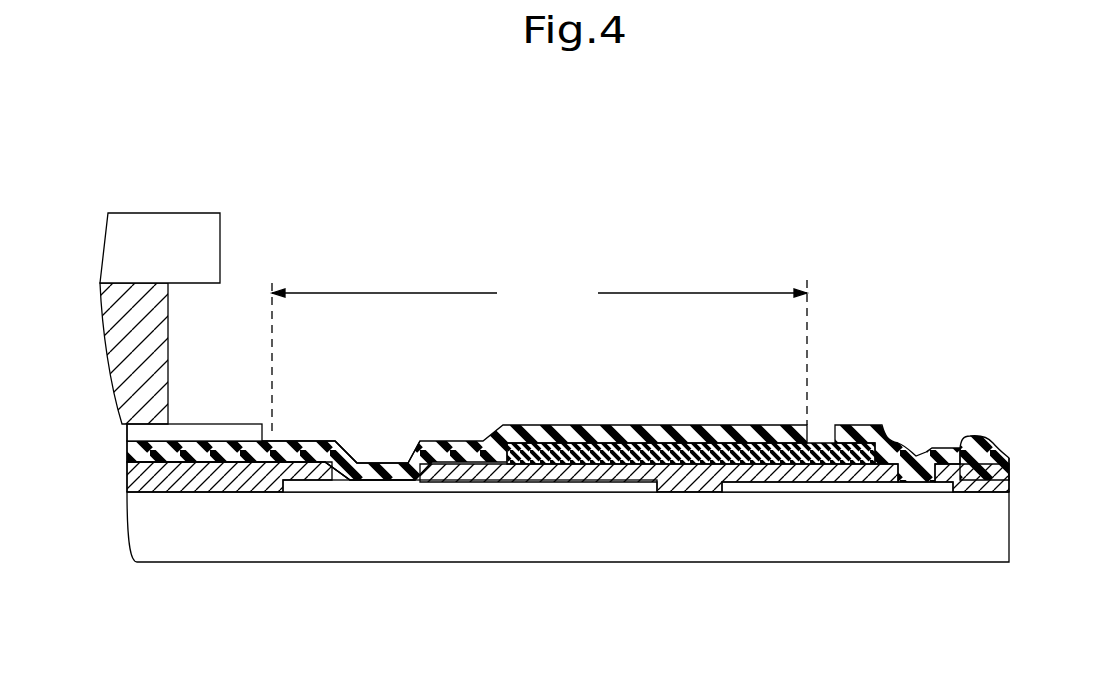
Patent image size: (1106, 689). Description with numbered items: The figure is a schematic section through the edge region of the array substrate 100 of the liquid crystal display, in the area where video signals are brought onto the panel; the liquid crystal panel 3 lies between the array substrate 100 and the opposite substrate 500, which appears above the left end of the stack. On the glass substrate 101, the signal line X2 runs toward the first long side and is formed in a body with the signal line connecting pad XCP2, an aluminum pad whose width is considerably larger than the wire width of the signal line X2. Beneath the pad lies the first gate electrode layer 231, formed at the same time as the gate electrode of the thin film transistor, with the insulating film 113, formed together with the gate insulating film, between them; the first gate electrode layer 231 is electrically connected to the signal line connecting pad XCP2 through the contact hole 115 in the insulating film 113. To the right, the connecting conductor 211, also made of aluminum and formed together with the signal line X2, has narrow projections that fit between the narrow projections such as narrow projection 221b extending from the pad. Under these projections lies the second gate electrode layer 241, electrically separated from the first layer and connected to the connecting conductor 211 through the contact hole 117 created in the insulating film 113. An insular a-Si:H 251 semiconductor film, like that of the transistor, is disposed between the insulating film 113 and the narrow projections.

The liquid crystal panel 3 is at (458, 146).
The array substrate 100 is at (584, 416).
The glass substrate 101 is at (996, 557).
The insulating film 113 is at (135, 478).
The contact hole 115 is at (322, 478).
The contact hole 117 is at (923, 485).
The connecting conductor 211 is at (881, 426).
The narrow projection 221b is at (568, 427).
The first gate electrode layer 231 is at (398, 484).
The second gate electrode layer 241 is at (835, 487).
The insular a-Si:H 251 is at (663, 458).
The opposite substrate 500 is at (210, 233).
The signal line X2 is at (128, 453).
The signal line connecting pad XCP2 is at (539, 355).